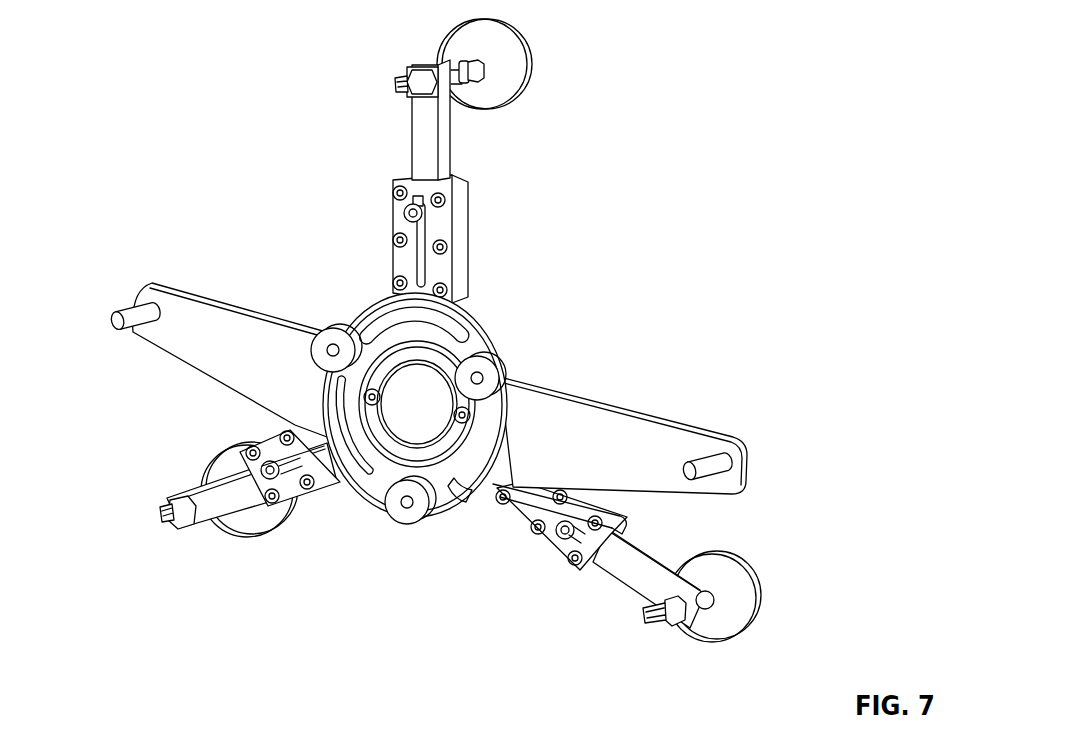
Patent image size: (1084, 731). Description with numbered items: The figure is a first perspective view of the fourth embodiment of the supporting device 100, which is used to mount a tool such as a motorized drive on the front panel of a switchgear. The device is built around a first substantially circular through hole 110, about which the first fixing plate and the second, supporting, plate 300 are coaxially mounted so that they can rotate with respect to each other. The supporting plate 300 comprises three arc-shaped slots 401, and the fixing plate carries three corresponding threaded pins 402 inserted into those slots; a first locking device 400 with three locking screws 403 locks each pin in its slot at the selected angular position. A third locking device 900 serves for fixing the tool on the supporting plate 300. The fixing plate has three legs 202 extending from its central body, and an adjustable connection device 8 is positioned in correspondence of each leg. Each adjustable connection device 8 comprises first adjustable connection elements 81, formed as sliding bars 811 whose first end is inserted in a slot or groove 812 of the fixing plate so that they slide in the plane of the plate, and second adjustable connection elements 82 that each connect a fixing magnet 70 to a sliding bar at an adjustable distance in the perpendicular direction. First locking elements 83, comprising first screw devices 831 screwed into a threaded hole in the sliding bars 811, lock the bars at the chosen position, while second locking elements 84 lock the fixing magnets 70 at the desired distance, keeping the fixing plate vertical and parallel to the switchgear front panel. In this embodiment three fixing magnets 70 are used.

The supporting device 100 is at (135, 52).
The adjustable connection device 8 is at (357, 127).
The first adjustable connection elements 81 is at (403, 152).
The second adjustable connection elements 82 is at (470, 92).
The first locking elements 83 is at (440, 214).
The second locking elements 84 is at (402, 75).
The legs 202 is at (468, 285).
The second, supporting, plate 300 is at (540, 400).
The first locking device 400 is at (370, 505).
The arc-shaped slots 401 is at (465, 510).
The threaded pins 402 is at (477, 378).
The locking screws 403 is at (330, 333).
The first substantially circular through hole 110 is at (430, 432).
The third locking device 900 is at (135, 300).
The fixing magnets 70 is at (245, 528).
The sliding bars 811 is at (632, 572).
The slot or groove 812 is at (548, 545).
The first screw devices 831 is at (625, 510).